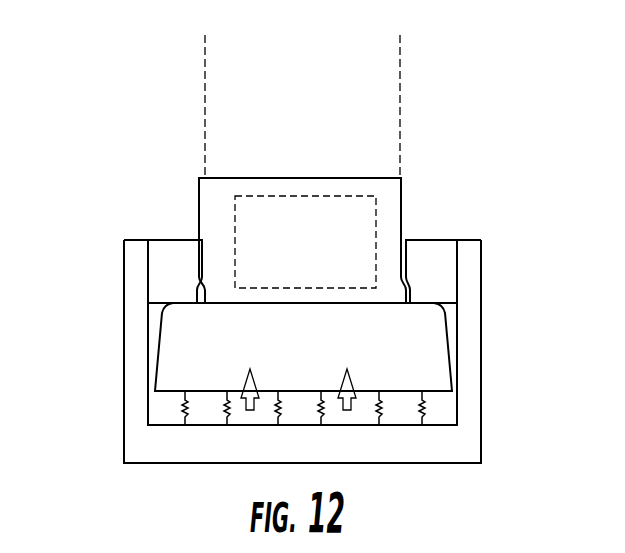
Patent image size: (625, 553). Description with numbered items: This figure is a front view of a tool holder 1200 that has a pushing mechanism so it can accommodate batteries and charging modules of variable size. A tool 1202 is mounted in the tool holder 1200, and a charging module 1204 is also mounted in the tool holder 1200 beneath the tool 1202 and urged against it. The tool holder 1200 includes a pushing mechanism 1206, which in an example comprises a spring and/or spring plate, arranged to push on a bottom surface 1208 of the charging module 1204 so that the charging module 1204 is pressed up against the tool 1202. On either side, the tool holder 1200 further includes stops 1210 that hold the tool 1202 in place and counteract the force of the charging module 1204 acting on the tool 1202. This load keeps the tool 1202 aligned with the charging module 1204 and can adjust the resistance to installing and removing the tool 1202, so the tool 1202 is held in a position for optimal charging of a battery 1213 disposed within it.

The tool holder 1200 is at (155, 485).
The tool 1202 is at (163, 150).
The charging module 1204 is at (160, 375).
The pushing mechanism 1206 is at (432, 413).
The bottom surface 1208 is at (388, 393).
The stops 1210 is at (177, 245).
The battery 1213 is at (378, 207).